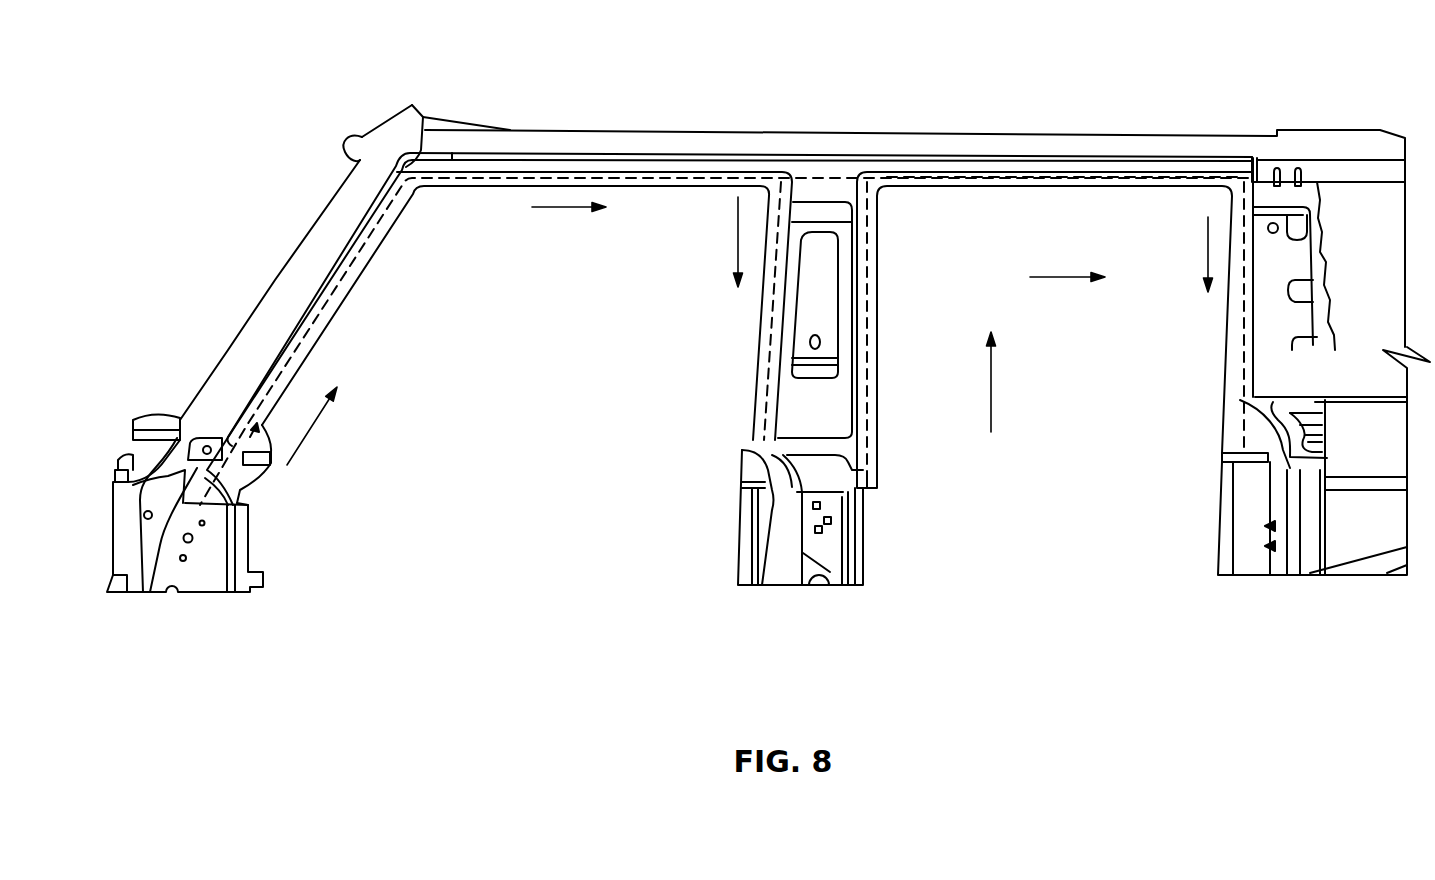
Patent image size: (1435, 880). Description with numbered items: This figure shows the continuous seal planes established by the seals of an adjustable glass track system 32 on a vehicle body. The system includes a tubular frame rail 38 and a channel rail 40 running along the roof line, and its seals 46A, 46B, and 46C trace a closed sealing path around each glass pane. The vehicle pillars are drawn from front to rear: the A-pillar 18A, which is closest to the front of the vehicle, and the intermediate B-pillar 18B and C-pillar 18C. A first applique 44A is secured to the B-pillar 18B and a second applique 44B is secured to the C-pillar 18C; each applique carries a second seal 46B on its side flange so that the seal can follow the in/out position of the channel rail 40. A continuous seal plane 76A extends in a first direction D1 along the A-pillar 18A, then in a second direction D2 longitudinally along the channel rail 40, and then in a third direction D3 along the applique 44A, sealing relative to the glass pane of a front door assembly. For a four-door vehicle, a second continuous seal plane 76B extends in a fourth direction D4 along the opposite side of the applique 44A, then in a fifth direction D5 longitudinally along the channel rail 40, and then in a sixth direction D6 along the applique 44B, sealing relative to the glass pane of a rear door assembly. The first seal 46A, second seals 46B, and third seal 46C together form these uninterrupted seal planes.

The adjustable glass track system 32 is at (1060, 48).
The tubular frame rail 38 is at (788, 137).
The channel rail 40 is at (908, 170).
The first seal 46A is at (452, 193).
The second seal 46B is at (753, 333).
The third seal 46C is at (323, 337).
The A-pillar 18A is at (262, 299).
The B-pillar 18B is at (837, 507).
The C-pillar 18C is at (1255, 458).
The first applique 44A is at (832, 328).
The second applique 44B is at (1283, 268).
The continuous seal plane 76A is at (267, 463).
The second continuous seal plane 76B is at (881, 431).
The first direction D1 is at (312, 423).
The second direction D2 is at (565, 207).
The third direction D3 is at (736, 237).
The fourth direction D4 is at (992, 384).
The fifth direction D5 is at (1063, 278).
The sixth direction D6 is at (1207, 257).